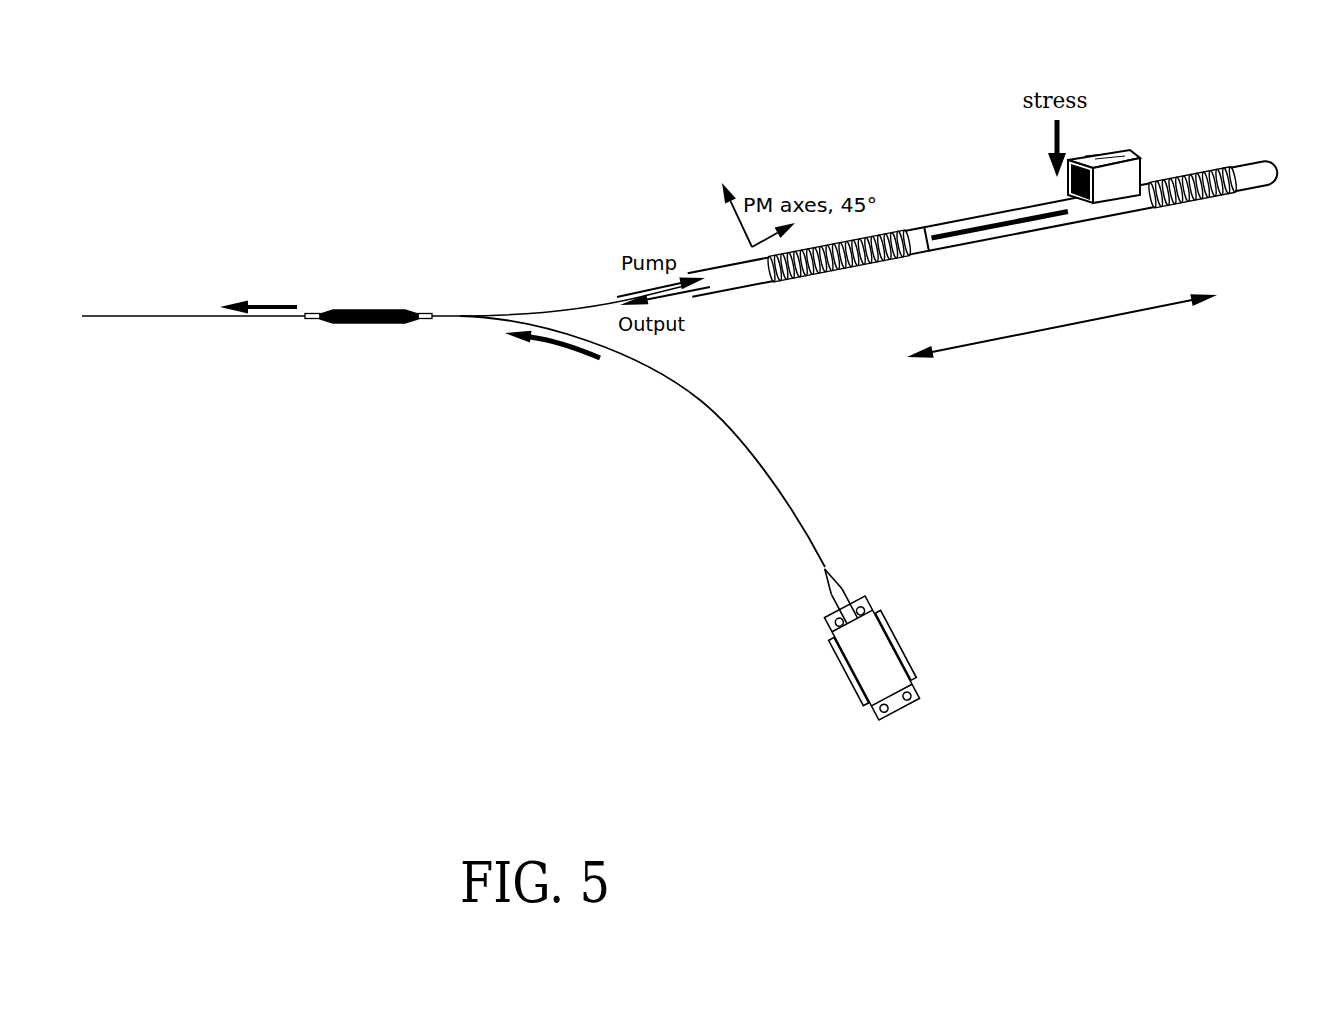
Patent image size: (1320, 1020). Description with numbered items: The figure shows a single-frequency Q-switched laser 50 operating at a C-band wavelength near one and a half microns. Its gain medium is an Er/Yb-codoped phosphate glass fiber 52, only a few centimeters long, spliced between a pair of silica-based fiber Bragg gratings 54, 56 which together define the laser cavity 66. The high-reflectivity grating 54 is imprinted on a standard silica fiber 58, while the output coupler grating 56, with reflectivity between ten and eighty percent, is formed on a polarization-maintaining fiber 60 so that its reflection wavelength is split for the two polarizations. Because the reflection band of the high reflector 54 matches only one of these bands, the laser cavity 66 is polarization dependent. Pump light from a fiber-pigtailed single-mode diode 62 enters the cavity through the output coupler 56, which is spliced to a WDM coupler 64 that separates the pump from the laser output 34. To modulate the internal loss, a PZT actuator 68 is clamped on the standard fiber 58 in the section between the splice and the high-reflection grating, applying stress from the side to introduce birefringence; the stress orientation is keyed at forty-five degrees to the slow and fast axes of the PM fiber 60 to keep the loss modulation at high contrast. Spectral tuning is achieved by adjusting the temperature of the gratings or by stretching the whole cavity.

The laser output 34 is at (250, 301).
The Q-switched laser 50 is at (486, 488).
The Er/Yb-codoped phosphate glass fiber 52 is at (1012, 237).
The high-reflectivity fiber Bragg grating 54 is at (1205, 196).
The output coupler fiber Bragg grating 56 is at (840, 268).
The standard silica fiber 58 is at (1243, 168).
The polarization-maintaining fiber 60 is at (743, 280).
The fiber-pigtailed single-mode 976-nm diode 62 is at (898, 638).
The WDM coupler 64 is at (387, 308).
The laser cavity 66 is at (1093, 321).
The PZT actuator 68 is at (1122, 153).